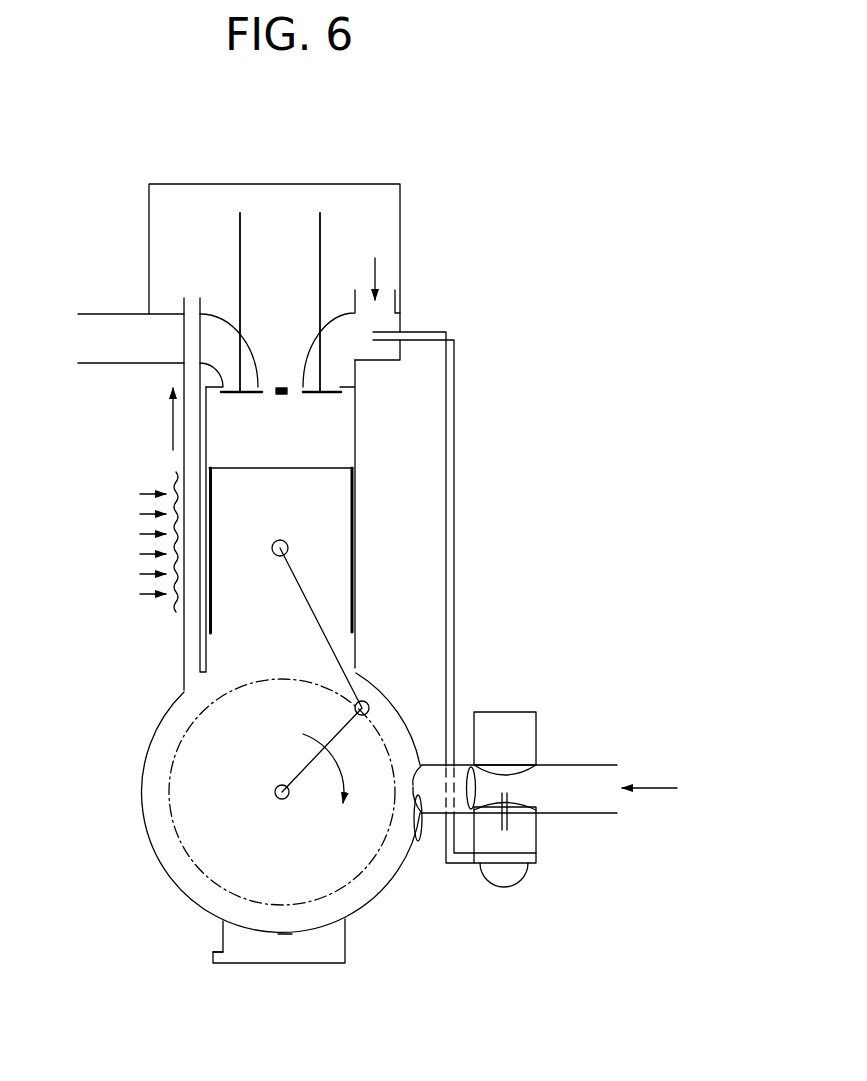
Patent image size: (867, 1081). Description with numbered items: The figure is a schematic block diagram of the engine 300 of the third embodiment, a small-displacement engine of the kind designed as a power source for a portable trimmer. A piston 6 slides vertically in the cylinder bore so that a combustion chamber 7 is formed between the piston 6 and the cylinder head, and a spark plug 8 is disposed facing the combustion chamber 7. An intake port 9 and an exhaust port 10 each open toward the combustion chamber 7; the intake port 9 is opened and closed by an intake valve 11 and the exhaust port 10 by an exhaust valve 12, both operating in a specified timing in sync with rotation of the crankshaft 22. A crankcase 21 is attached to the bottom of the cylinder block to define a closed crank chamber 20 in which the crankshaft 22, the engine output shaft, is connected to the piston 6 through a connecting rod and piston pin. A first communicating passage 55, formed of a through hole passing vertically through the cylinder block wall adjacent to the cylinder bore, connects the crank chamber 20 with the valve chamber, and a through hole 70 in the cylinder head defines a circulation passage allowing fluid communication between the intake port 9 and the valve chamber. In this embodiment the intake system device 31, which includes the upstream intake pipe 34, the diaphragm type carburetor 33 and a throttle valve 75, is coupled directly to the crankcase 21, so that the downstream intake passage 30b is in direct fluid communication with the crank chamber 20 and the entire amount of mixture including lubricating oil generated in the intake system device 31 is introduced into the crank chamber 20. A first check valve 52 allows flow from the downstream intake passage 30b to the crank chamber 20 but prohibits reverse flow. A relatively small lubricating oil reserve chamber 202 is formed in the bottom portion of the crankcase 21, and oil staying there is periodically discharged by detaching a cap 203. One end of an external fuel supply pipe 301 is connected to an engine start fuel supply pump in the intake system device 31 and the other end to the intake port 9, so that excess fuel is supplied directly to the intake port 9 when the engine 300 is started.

The engine 300 is at (128, 179).
The exhaust port 10 is at (118, 341).
The first communicating passage 55 is at (182, 656).
The piston 6 is at (325, 468).
The exhaust valve 12 is at (240, 236).
The intake valve 11 is at (320, 236).
The spark plug 8 is at (279, 386).
The through hole 70 is at (385, 302).
The intake port 9 is at (341, 347).
The external fuel supply pipe 301 is at (449, 395).
The combustion chamber 7 is at (291, 447).
The crankshaft 22 is at (275, 791).
The crankcase 21 is at (161, 863).
The crank chamber 20 is at (197, 873).
The lubricating oil reserve chamber 202 is at (323, 944).
The cap 203 is at (213, 957).
The first check valve 52 is at (417, 808).
The downstream intake passage 30b is at (433, 786).
The upstream intake pipe 34 is at (590, 813).
The throttle valve 75 is at (478, 788).
The carburetor 33 is at (544, 841).
The intake system device 31 is at (682, 830).